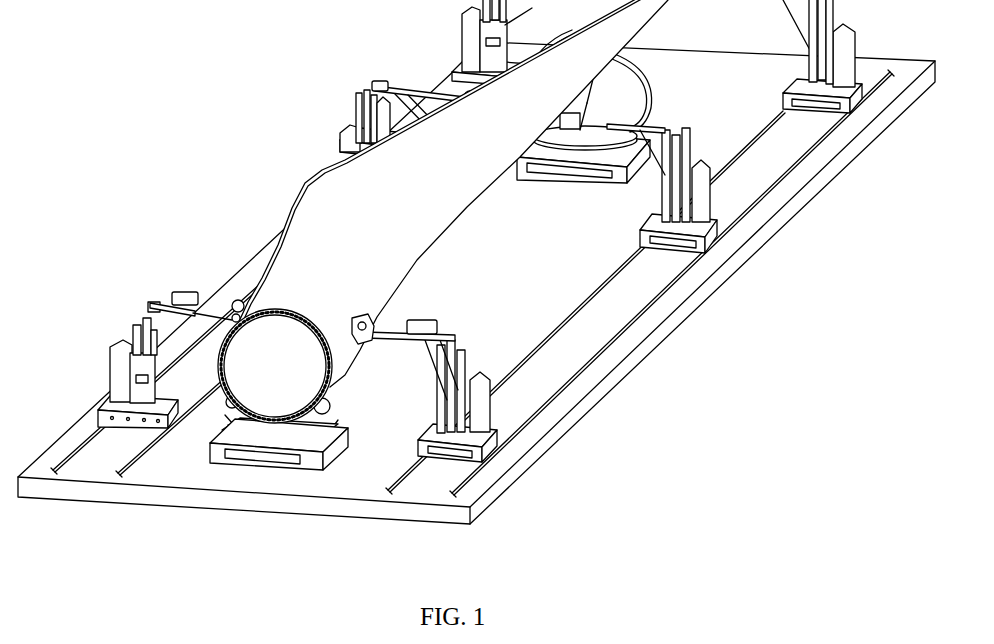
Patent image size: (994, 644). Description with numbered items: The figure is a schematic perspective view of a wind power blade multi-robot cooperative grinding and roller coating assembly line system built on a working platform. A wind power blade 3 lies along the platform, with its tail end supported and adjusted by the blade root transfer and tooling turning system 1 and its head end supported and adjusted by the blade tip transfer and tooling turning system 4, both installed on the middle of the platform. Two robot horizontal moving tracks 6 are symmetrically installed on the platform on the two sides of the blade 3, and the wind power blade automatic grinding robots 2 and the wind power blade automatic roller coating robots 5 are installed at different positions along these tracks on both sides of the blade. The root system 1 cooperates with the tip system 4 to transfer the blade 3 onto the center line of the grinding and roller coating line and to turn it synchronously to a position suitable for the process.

The blade root transfer and tooling turning system 1 is at (205, 436).
The wind power blade automatic grinding robots 2 is at (146, 307).
The wind power blade 3 is at (365, 193).
The blade tip transfer and tooling turning system 4 is at (691, 129).
The wind power blade automatic roller coating robots 5 is at (736, 220).
The robot horizontal moving tracks 6 is at (472, 283).